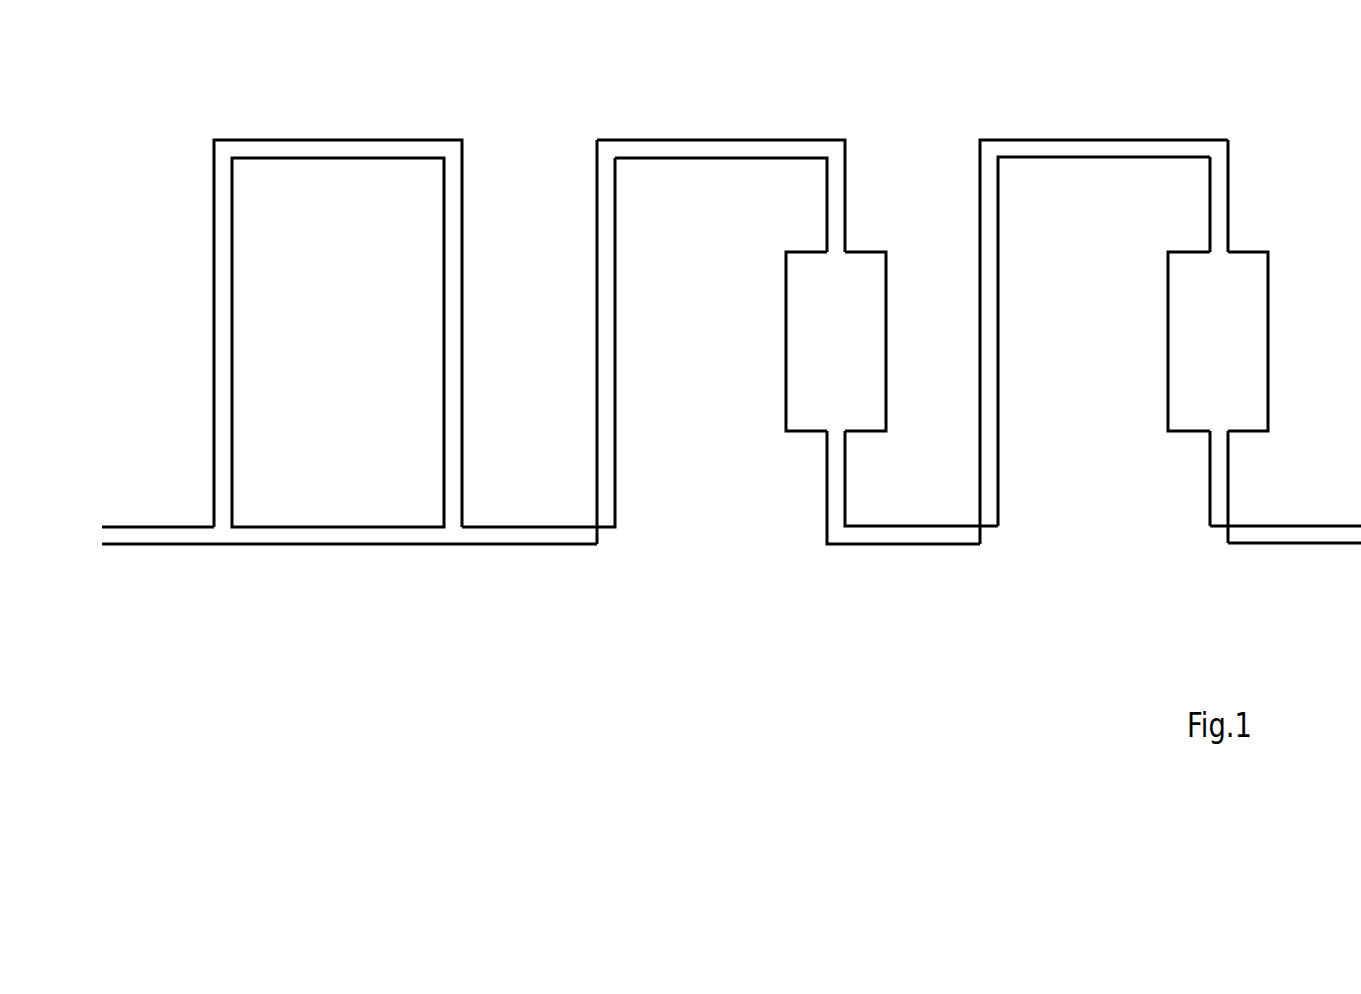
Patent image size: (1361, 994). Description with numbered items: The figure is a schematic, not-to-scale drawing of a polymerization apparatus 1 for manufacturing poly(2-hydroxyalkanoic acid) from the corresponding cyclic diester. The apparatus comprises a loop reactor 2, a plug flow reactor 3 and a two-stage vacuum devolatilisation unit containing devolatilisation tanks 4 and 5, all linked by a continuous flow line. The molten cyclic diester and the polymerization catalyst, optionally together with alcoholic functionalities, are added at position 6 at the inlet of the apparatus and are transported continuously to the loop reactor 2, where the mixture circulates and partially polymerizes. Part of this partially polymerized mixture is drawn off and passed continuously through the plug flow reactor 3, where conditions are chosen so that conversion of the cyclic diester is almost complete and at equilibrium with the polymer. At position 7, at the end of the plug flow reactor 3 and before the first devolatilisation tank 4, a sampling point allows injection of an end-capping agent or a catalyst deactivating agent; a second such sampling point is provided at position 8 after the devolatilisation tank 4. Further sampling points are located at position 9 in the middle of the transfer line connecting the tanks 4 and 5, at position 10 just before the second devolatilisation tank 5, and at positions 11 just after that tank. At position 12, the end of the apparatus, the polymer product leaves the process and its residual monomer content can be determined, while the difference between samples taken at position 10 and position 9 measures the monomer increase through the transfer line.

The polymerization apparatus 1 is at (181, 112).
The loop reactor 2 is at (331, 150).
The plug flow reactor 3 is at (606, 493).
The devolatilisation tank 4 is at (807, 408).
The devolatilisation tank 5 is at (1187, 410).
The position 6 is at (144, 538).
The position 7 is at (739, 149).
The position 8 is at (833, 485).
The position 9 is at (988, 488).
The position 10 is at (1215, 204).
The positions 11 is at (1217, 480).
The position 12 is at (1330, 535).